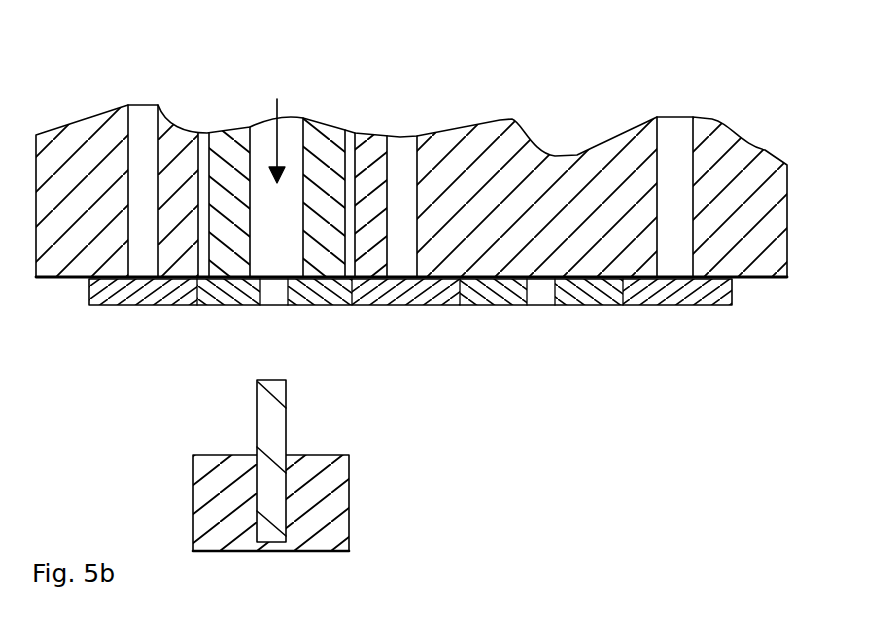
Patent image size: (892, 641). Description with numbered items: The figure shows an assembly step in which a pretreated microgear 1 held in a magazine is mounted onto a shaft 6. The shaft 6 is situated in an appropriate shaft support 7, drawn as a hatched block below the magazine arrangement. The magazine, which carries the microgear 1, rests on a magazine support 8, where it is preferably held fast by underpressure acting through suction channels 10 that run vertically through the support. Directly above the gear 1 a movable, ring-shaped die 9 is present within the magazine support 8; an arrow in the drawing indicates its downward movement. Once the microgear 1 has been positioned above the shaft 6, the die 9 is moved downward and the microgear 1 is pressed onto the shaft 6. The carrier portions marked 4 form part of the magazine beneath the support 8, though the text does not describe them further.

The microgear 1 is at (335, 305).
The end piece of carrier 4 is at (138, 297).
The shaft 6 is at (275, 428).
The shaft support 7 is at (335, 492).
The magazine support 8 is at (799, 262).
The movable die 9 is at (322, 138).
The suction channels 10 is at (142, 117).